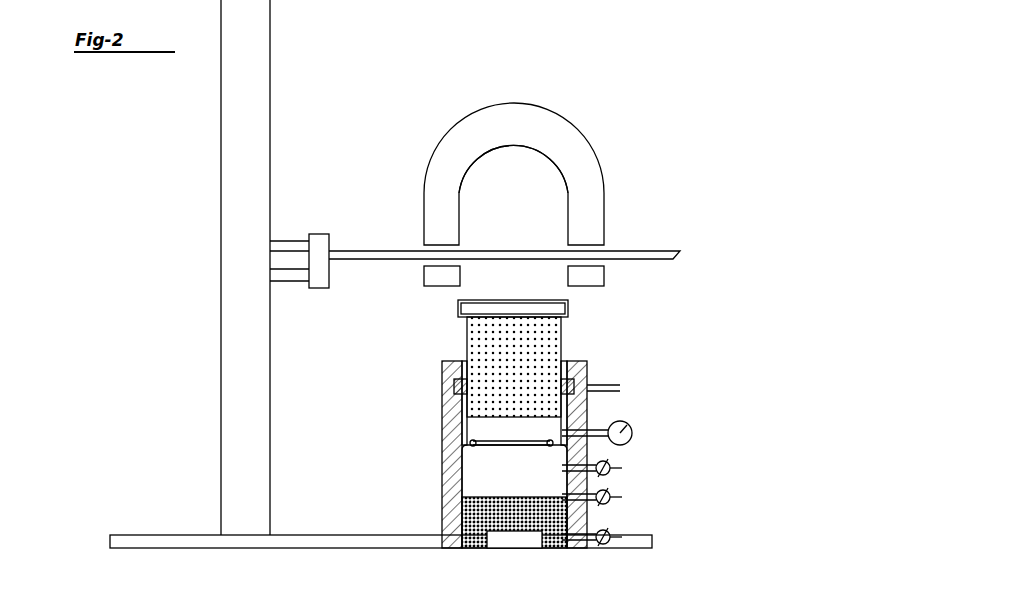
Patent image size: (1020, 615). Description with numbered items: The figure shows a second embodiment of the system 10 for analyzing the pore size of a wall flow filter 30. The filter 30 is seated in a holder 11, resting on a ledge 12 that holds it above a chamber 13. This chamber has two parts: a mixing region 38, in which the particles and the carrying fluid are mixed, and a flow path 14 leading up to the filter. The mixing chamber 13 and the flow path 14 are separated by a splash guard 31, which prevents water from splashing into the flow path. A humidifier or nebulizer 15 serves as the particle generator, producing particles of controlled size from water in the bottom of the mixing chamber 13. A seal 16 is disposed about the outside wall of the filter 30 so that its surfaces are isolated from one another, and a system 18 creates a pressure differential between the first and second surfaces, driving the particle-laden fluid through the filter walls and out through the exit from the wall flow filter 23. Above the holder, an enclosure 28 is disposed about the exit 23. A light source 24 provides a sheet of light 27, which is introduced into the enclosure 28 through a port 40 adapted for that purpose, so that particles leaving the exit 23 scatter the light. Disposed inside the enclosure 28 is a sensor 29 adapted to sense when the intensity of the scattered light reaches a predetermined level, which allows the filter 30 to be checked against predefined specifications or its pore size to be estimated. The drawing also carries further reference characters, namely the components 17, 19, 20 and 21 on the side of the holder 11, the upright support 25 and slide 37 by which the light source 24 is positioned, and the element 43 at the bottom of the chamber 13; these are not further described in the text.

The system 10 is at (196, 238).
The holder 11 is at (550, 431).
The ledge 12 is at (458, 397).
The mixing chamber 13 is at (455, 475).
The flow path 14 is at (463, 428).
The humidifier or nebulizer 15 is at (520, 540).
The seal 16 is at (587, 380).
The port 17 is at (620, 388).
The pressure differential system 18 is at (622, 468).
The valve 19 is at (622, 497).
The valve 20 is at (622, 537).
The pressure gauge 21 is at (632, 433).
The exit from the wall flow filter 23 is at (480, 300).
The light source 24 is at (293, 258).
The column 25 is at (260, 112).
The sheet of light 27 is at (355, 251).
The enclosure 28 is at (580, 150).
The sensor 29 is at (527, 140).
The wall flow filter 30 is at (482, 352).
The splash guard 31 is at (505, 445).
The slide bracket 37 is at (320, 234).
The mixing region 38 is at (497, 417).
The port 40 is at (607, 246).
The filter 43 is at (518, 515).